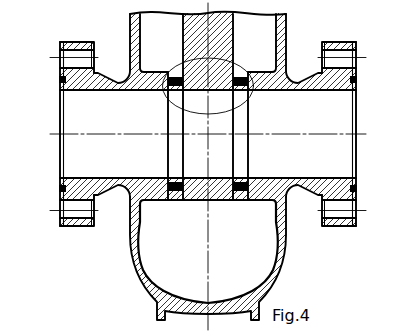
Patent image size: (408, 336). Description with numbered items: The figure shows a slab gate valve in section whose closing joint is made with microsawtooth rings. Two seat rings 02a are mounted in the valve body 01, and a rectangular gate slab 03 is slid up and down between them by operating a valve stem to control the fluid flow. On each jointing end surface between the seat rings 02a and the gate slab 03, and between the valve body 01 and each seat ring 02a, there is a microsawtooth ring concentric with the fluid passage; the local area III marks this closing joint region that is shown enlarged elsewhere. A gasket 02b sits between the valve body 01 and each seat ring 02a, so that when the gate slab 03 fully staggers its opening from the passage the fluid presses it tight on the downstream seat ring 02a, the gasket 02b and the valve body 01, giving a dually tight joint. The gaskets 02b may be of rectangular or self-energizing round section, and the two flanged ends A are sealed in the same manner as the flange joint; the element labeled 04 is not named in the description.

The valve body 01 is at (131, 32).
The gate slab 03 is at (221, 43).
The local area III is at (171, 62).
The sealing ring 04 is at (61, 78).
The flanged end A is at (63, 228).
The seat ring 02a is at (142, 256).
The gasket 02b is at (132, 240).